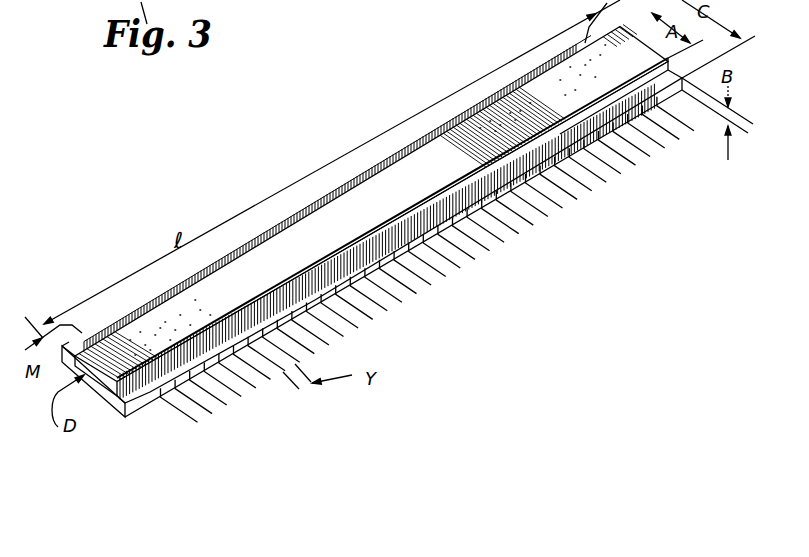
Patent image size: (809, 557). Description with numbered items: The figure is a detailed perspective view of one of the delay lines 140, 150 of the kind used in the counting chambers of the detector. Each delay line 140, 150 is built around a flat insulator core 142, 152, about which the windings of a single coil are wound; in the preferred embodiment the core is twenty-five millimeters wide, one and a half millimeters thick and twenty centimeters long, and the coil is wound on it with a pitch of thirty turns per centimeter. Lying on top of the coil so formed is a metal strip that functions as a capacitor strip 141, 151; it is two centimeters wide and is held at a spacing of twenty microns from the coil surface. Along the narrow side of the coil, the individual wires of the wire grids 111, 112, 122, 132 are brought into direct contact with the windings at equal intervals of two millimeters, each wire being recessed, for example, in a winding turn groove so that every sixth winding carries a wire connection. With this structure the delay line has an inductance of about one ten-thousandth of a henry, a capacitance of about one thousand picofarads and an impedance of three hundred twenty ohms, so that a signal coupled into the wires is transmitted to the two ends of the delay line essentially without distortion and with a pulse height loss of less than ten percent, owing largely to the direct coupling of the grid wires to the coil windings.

The wire grid 111 is at (430, 267).
The wire grid 112 is at (430, 267).
The wire grid 122 is at (430, 267).
The wire grid 132 is at (192, 438).
The delay line 140 is at (337, 193).
The delay line 150 is at (475, 101).
The capacitor strip 141 is at (371, 203).
The capacitor strip 151 is at (318, 226).
The insulator core 142 is at (372, 273).
The insulator core 152 is at (125, 418).